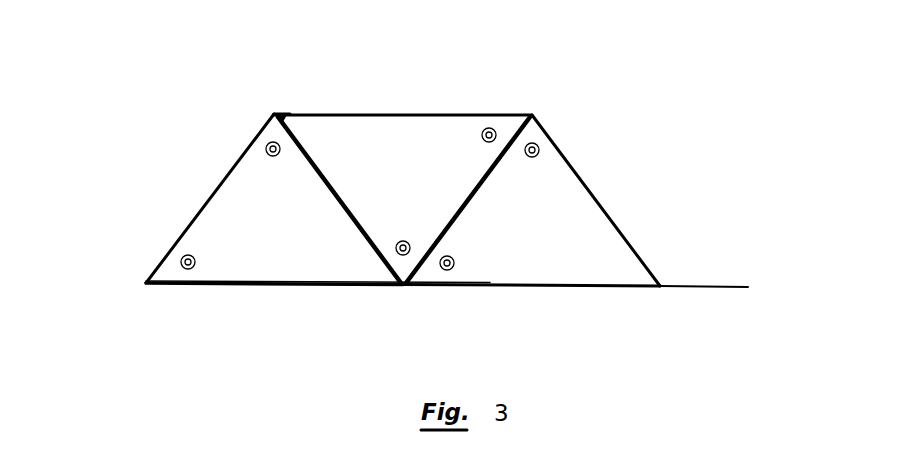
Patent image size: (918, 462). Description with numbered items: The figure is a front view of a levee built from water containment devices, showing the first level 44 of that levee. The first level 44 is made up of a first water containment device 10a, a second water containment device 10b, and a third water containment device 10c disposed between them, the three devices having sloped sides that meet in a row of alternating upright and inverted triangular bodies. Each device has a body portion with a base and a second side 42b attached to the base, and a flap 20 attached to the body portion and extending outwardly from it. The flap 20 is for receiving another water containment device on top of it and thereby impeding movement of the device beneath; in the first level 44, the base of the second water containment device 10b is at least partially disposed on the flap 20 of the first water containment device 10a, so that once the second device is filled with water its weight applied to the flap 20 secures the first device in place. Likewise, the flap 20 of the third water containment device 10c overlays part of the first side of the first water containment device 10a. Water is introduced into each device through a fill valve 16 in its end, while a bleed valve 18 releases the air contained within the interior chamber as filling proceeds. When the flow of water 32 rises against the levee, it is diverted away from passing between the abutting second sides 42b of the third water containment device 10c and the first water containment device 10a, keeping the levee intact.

The first water containment device 10a is at (268, 275).
The second water containment device 10b is at (560, 275).
The third water containment device 10c is at (382, 123).
The fill valve 16 is at (181, 259).
The bleed valve 18 is at (272, 142).
The flap 20 is at (240, 152).
The flow of water 32 is at (704, 116).
The second side 42b is at (272, 114).
The first level 44 is at (124, 196).